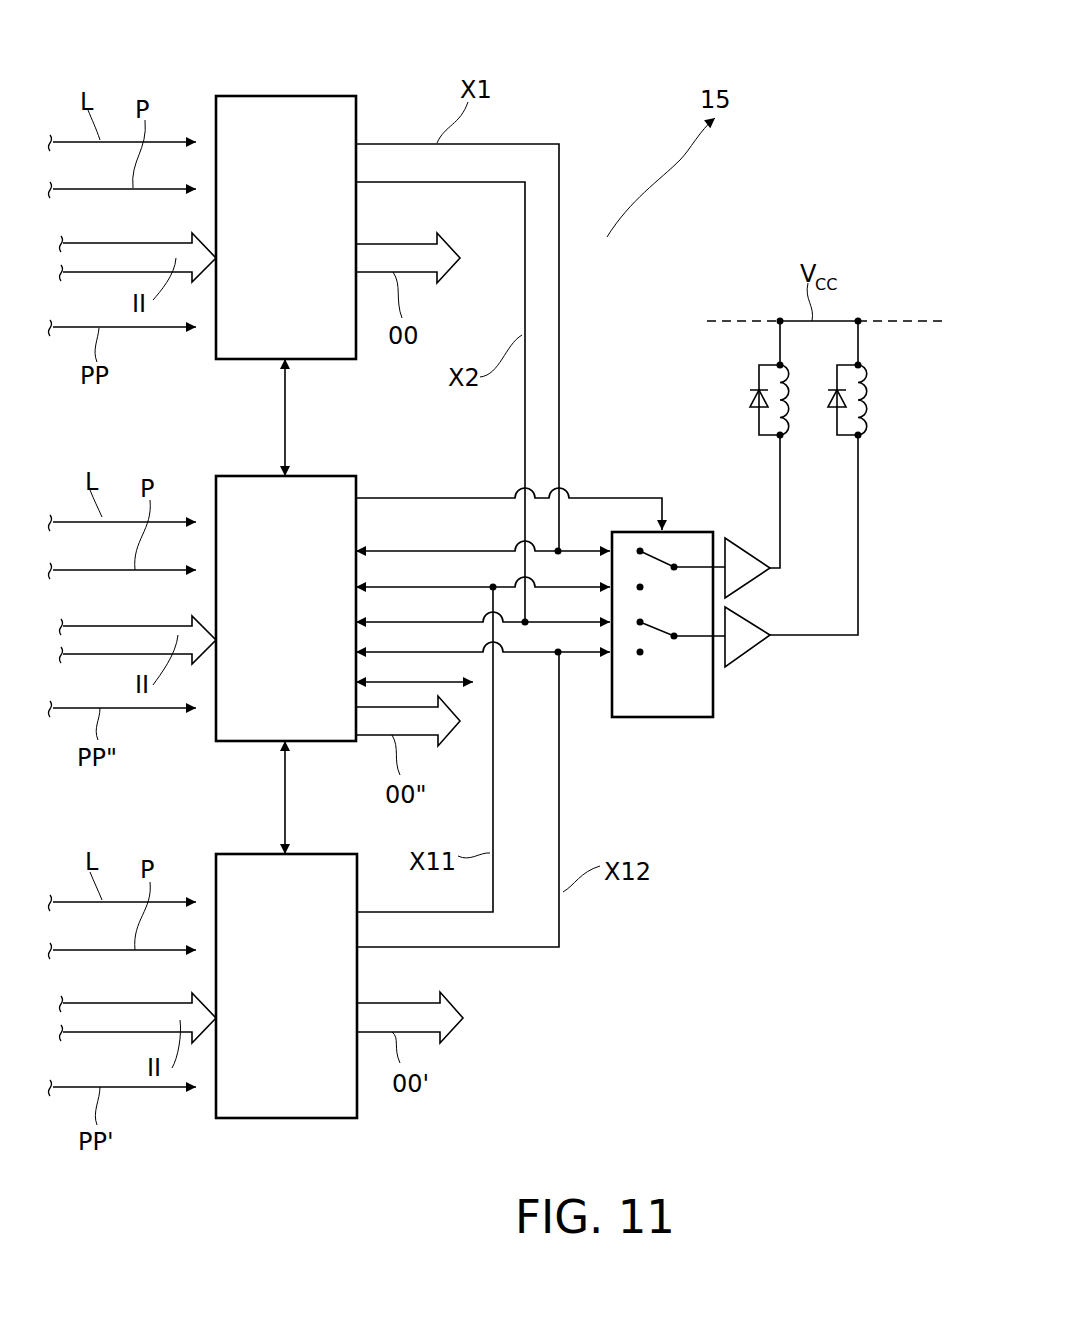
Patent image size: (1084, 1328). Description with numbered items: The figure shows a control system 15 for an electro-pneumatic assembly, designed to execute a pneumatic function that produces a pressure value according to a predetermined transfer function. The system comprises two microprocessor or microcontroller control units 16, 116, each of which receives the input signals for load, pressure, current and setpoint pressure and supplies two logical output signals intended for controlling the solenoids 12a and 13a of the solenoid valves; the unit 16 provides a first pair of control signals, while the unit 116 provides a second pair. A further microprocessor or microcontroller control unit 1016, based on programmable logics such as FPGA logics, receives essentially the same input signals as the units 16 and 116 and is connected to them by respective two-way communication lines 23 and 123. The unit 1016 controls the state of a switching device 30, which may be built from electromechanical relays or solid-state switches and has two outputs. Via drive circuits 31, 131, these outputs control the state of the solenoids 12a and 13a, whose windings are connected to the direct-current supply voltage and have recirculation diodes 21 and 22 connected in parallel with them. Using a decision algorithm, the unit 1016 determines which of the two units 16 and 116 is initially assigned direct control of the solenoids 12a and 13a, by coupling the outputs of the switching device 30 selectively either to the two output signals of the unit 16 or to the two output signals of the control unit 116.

The microprocessor or microcontroller control unit 16 is at (290, 96).
The control system 15 is at (712, 100).
The two-way communication line 23 is at (280, 400).
The further microprocessor or microcontroller control unit 1016 is at (322, 477).
The two-way communication line 123 is at (278, 786).
The microprocessor or microcontroller control unit 116 is at (298, 1118).
The switching device 30 is at (668, 700).
The drive circuit 31 is at (742, 560).
The drive circuit 131 is at (745, 655).
The recirculation diode 21 is at (748, 397).
The recirculation diode 22 is at (818, 400).
The solenoid 12a is at (788, 395).
The solenoid 13a is at (867, 397).